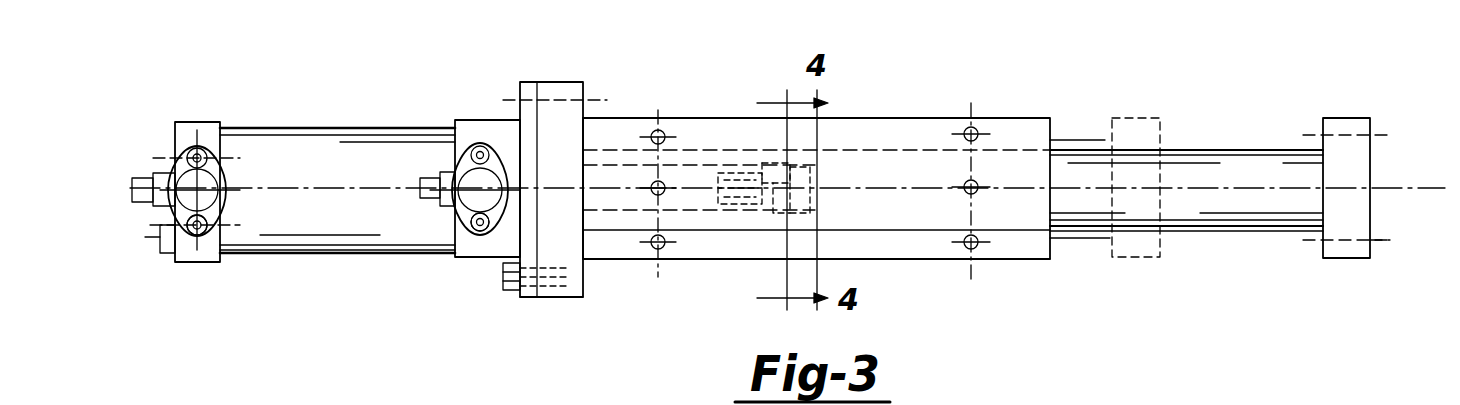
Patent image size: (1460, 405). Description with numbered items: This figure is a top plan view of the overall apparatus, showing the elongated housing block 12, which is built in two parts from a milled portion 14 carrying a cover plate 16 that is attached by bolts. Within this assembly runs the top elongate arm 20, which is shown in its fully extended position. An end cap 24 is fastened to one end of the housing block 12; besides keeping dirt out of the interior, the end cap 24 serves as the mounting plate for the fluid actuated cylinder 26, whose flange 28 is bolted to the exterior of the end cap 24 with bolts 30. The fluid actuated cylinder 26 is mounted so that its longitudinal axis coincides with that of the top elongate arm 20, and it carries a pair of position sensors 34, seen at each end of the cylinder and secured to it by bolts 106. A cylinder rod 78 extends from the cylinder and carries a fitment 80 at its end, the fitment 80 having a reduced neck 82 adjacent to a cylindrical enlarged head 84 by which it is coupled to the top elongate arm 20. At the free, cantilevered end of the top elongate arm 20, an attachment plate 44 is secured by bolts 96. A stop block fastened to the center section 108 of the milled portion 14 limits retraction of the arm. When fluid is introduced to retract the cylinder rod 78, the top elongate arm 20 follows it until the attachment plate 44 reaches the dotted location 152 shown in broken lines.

The housing block 12 is at (625, 118).
The milled portion 14 is at (890, 118).
The cover plate 16 is at (885, 259).
The top elongate arm 20 is at (1185, 150).
The end cap 24 is at (565, 297).
The fluid actuated cylinder 26 is at (340, 128).
The flange 28 is at (530, 82).
The bolts 30 is at (506, 290).
The position sensors 34 is at (226, 190).
The attachment plate 44 is at (1347, 118).
The cylinder rod 78 is at (700, 177).
The fitment 80 is at (733, 208).
The neck 82 is at (778, 165).
The enlarged head 84 is at (805, 158).
The bolts 96 is at (1378, 240).
The bolts 106 is at (197, 235).
The center section 108 is at (664, 132).
The dotted location 152 is at (1140, 257).